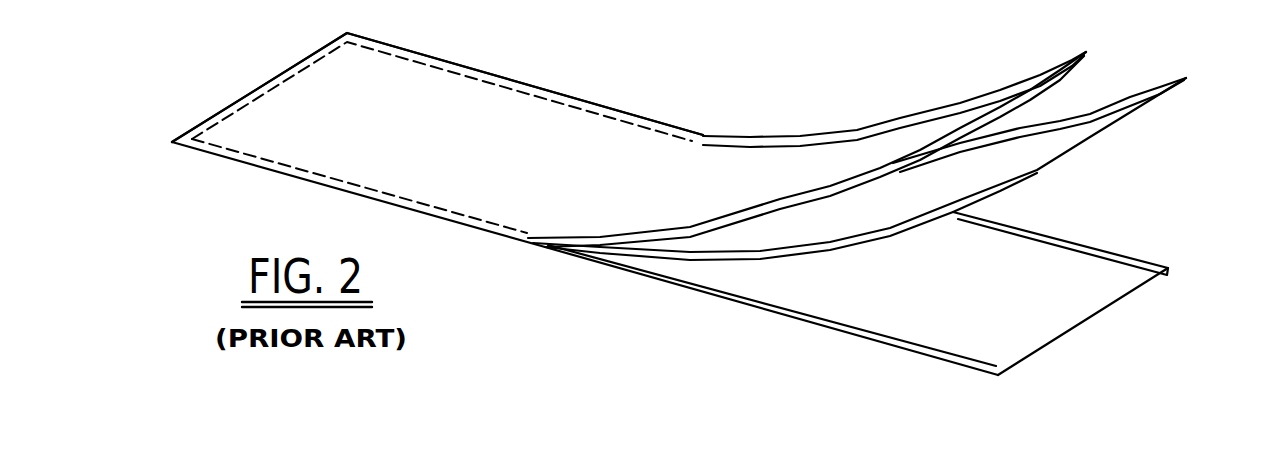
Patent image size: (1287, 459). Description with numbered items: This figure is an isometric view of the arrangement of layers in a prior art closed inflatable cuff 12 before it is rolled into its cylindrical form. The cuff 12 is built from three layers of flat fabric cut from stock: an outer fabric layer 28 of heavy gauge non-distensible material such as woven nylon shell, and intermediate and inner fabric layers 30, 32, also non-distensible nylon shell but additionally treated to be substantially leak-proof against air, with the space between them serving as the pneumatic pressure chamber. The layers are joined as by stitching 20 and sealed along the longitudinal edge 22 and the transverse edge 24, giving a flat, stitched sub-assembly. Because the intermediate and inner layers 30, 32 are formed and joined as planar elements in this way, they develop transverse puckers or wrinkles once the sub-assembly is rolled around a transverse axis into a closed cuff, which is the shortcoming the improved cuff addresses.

The closed inflatable cuff 12 is at (634, 97).
The stitching 20 is at (264, 95).
The longitudinal edge 22 is at (473, 68).
The transverse edge 24 is at (303, 60).
The outer fabric layer 28 is at (835, 307).
The intermediate fabric layer 30 is at (890, 210).
The inner fabric layer 32 is at (870, 150).